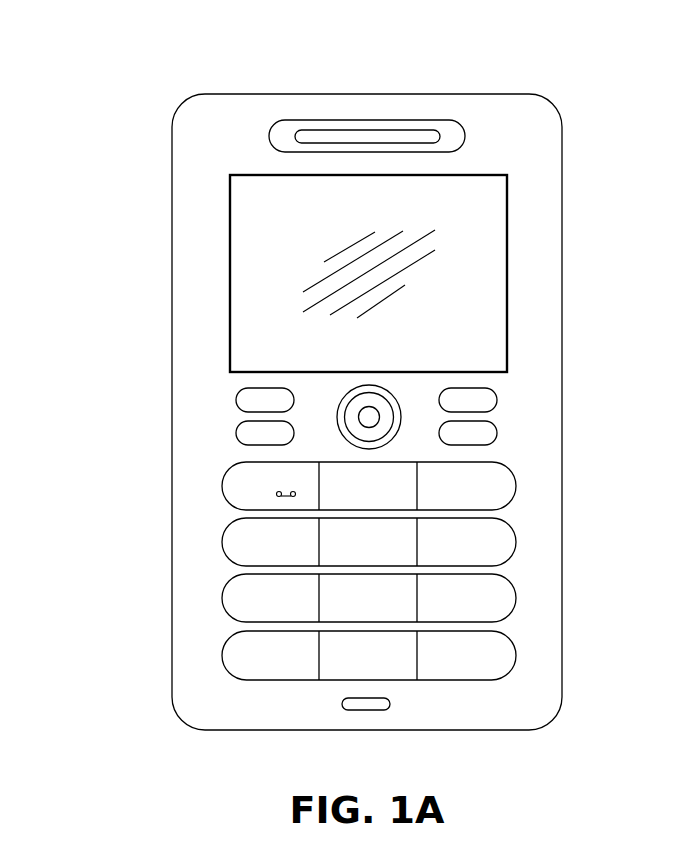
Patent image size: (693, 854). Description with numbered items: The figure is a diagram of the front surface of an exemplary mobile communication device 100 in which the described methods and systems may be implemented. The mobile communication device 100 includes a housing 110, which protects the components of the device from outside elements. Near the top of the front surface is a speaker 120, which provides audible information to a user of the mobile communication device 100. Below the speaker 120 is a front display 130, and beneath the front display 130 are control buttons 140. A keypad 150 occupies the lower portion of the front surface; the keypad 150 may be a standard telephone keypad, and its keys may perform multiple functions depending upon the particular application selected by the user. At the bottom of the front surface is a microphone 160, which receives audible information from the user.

The mobile communication device 100 is at (310, 58).
The housing 110 is at (172, 140).
The speaker 120 is at (465, 135).
The front display 130 is at (507, 273).
The control buttons 140 is at (520, 453).
The keypad 150 is at (530, 665).
The microphone 160 is at (370, 710).